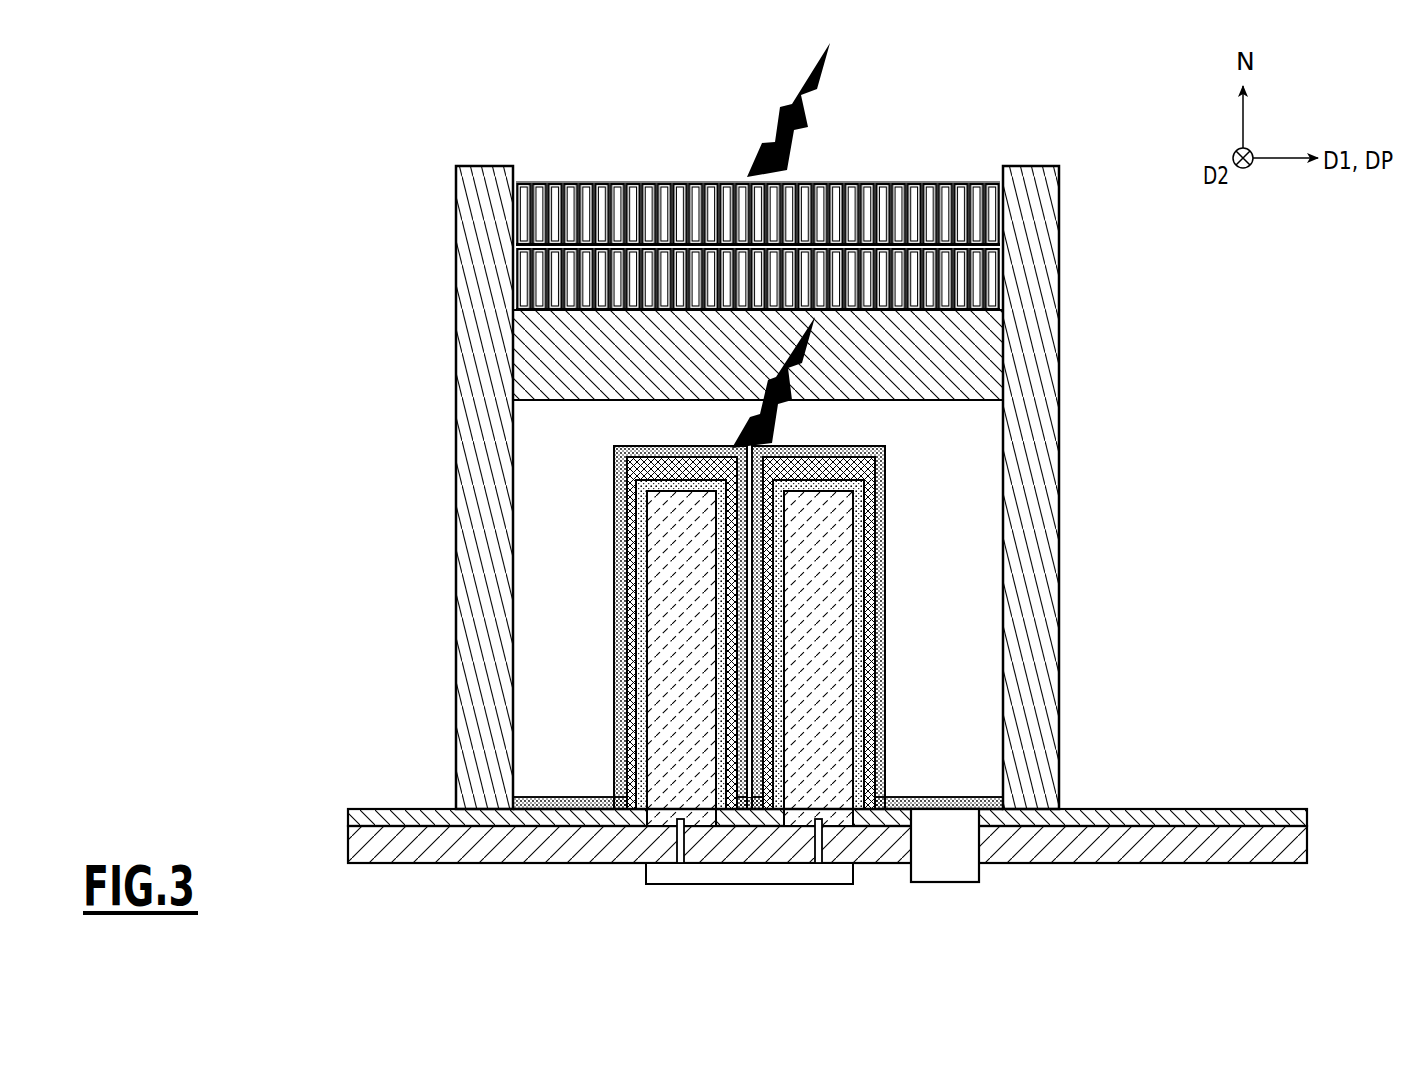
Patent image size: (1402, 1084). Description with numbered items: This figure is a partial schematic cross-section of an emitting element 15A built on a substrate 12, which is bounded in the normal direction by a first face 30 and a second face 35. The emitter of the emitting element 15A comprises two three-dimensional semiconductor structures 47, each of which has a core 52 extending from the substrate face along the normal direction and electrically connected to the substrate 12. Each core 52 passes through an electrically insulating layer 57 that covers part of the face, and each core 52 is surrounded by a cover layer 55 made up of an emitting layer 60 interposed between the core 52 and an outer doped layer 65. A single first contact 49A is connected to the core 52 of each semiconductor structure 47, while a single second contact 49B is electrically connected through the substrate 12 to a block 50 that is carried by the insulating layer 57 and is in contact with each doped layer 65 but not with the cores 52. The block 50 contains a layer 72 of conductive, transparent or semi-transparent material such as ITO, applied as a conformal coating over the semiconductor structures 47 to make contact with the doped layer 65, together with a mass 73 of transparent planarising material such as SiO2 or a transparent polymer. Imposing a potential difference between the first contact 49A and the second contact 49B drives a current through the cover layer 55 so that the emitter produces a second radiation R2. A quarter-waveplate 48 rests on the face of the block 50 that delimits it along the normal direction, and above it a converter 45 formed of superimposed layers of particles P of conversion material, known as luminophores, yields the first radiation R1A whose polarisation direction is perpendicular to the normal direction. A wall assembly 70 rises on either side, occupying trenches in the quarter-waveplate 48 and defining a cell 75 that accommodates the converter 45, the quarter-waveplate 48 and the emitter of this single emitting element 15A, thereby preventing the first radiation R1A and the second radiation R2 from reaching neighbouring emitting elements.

The substrate 12 is at (367, 843).
The first emitting element 15A is at (428, 270).
The first face 30 is at (1221, 822).
The second face 35 is at (1217, 868).
The converter 45 is at (988, 205).
The semiconductor structure 47 is at (518, 599).
The quarter-waveplate 48 is at (958, 355).
The first contact 49A is at (667, 868).
The second contact 49B is at (968, 873).
The block 50 is at (871, 604).
The core 52 is at (690, 712).
The cover layer 55 is at (549, 598).
The electrically insulating layer 57 is at (394, 815).
The emitting layer 60 is at (636, 537).
The doped layer 65 is at (626, 507).
The wall assembly 70 is at (490, 362).
The conductive transparent layer 72 is at (948, 800).
The planarising mass 73 is at (975, 553).
The cell 75 is at (598, 175).
The particles P is at (665, 200).
The first radiation R1A is at (839, 110).
The second radiation R2 is at (787, 382).